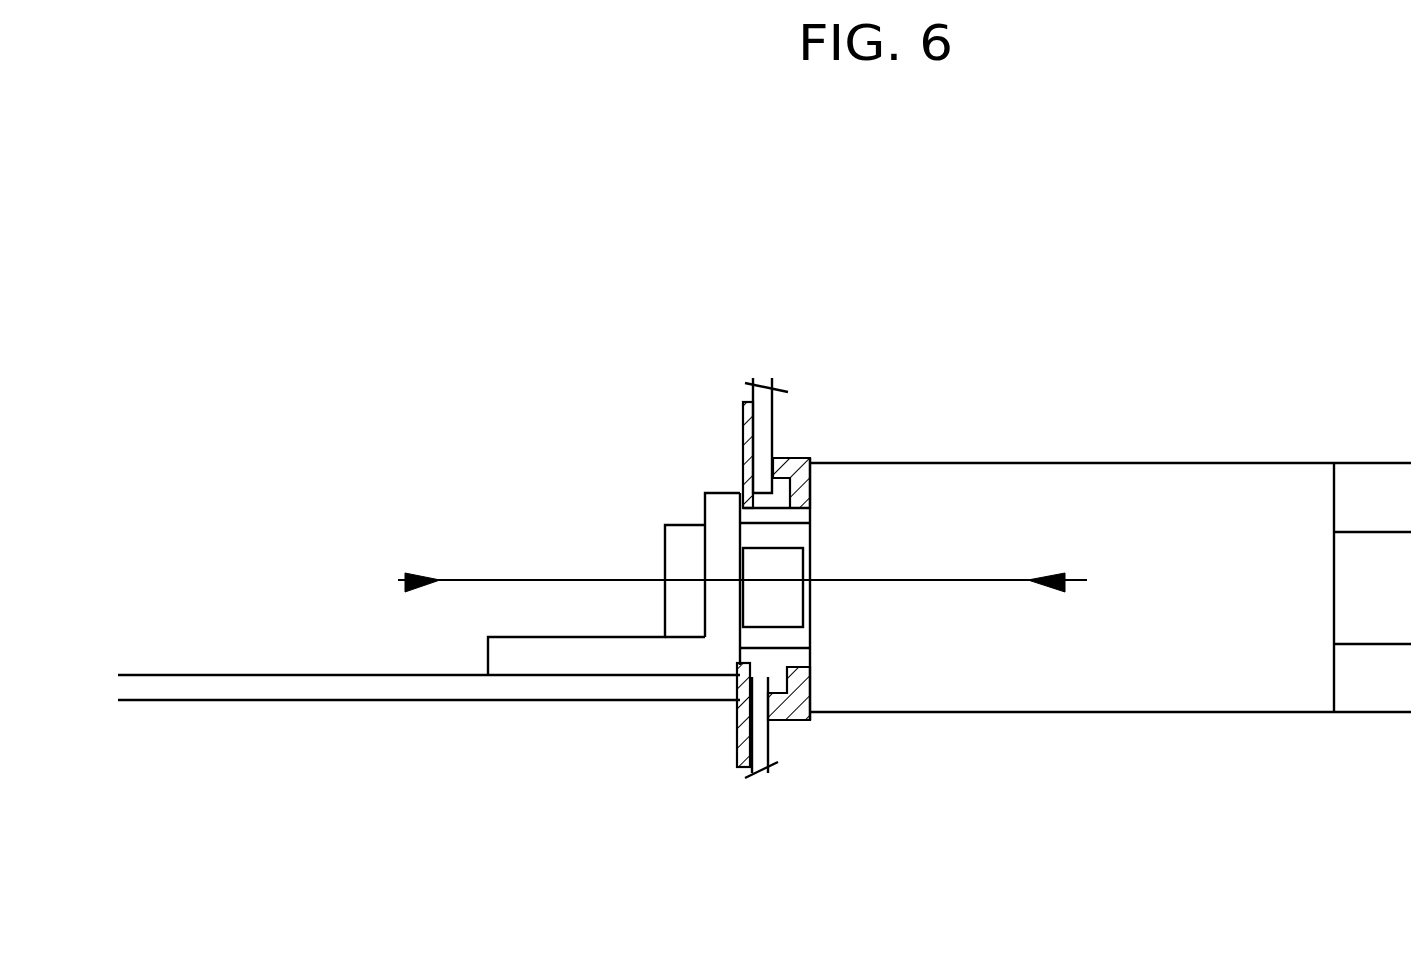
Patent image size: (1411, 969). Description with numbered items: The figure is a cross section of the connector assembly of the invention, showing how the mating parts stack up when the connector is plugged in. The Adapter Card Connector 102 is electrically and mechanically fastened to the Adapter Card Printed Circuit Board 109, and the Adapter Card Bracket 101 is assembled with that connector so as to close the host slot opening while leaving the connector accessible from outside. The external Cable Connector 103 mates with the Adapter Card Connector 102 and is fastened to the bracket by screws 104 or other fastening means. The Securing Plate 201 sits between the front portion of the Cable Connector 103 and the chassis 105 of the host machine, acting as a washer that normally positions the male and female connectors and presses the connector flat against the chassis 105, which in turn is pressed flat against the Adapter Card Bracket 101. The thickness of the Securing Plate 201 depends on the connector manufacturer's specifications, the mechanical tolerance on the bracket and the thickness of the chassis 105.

The Adapter Card Bracket 101 is at (649, 637).
The Adapter Card Connector 102 is at (779, 467).
The Cable Connector 103 is at (1110, 538).
The screws 104 is at (659, 432).
The chassis 105 is at (737, 547).
The Adapter Card Printed Circuit Board 109 is at (429, 609).
The Securing Plate 201 is at (879, 577).